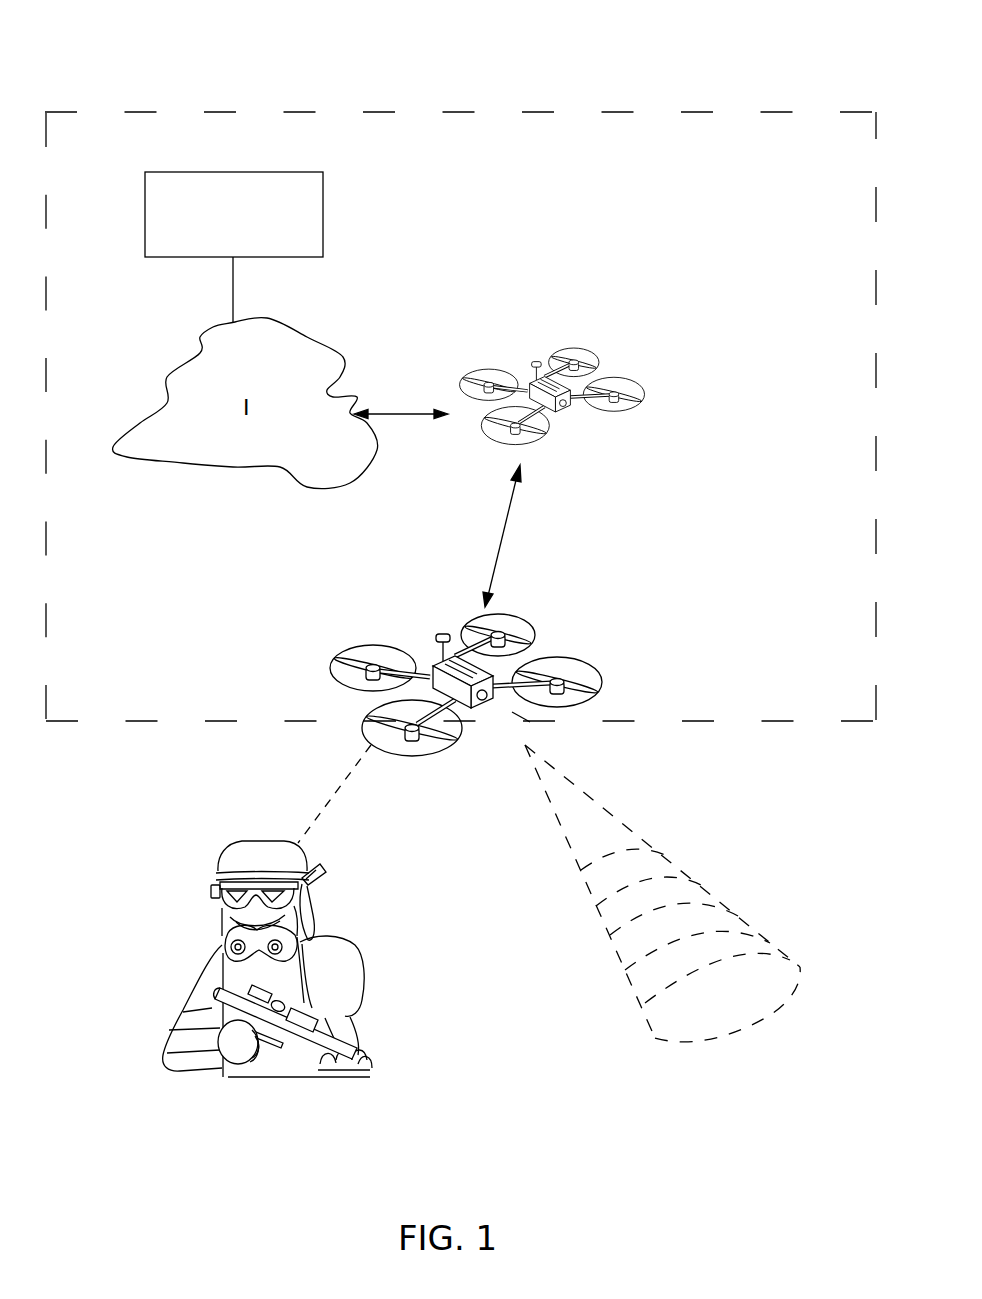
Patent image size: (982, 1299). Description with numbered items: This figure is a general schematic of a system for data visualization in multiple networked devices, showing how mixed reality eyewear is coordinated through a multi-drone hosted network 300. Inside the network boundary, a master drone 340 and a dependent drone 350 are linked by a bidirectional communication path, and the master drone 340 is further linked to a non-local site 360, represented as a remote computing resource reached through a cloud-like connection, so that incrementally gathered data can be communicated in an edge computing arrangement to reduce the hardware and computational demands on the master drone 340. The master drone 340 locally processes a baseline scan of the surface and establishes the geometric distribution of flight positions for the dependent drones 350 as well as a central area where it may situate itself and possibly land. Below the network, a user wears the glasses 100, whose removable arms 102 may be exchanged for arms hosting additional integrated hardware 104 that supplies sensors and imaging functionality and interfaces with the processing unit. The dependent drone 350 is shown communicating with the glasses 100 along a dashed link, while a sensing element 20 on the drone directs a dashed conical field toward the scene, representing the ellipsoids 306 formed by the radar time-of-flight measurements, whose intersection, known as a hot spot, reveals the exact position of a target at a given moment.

The multi-drone hosted network 300 is at (448, 112).
The non-local site 360 is at (234, 247).
The master drone 340 is at (684, 391).
The dependent drones 350 is at (648, 652).
The projector 20 is at (540, 728).
The ellipsoids 306 is at (688, 1022).
The glasses 100 is at (217, 903).
The arms 102 is at (293, 867).
The integrated hardware 104 is at (315, 880).